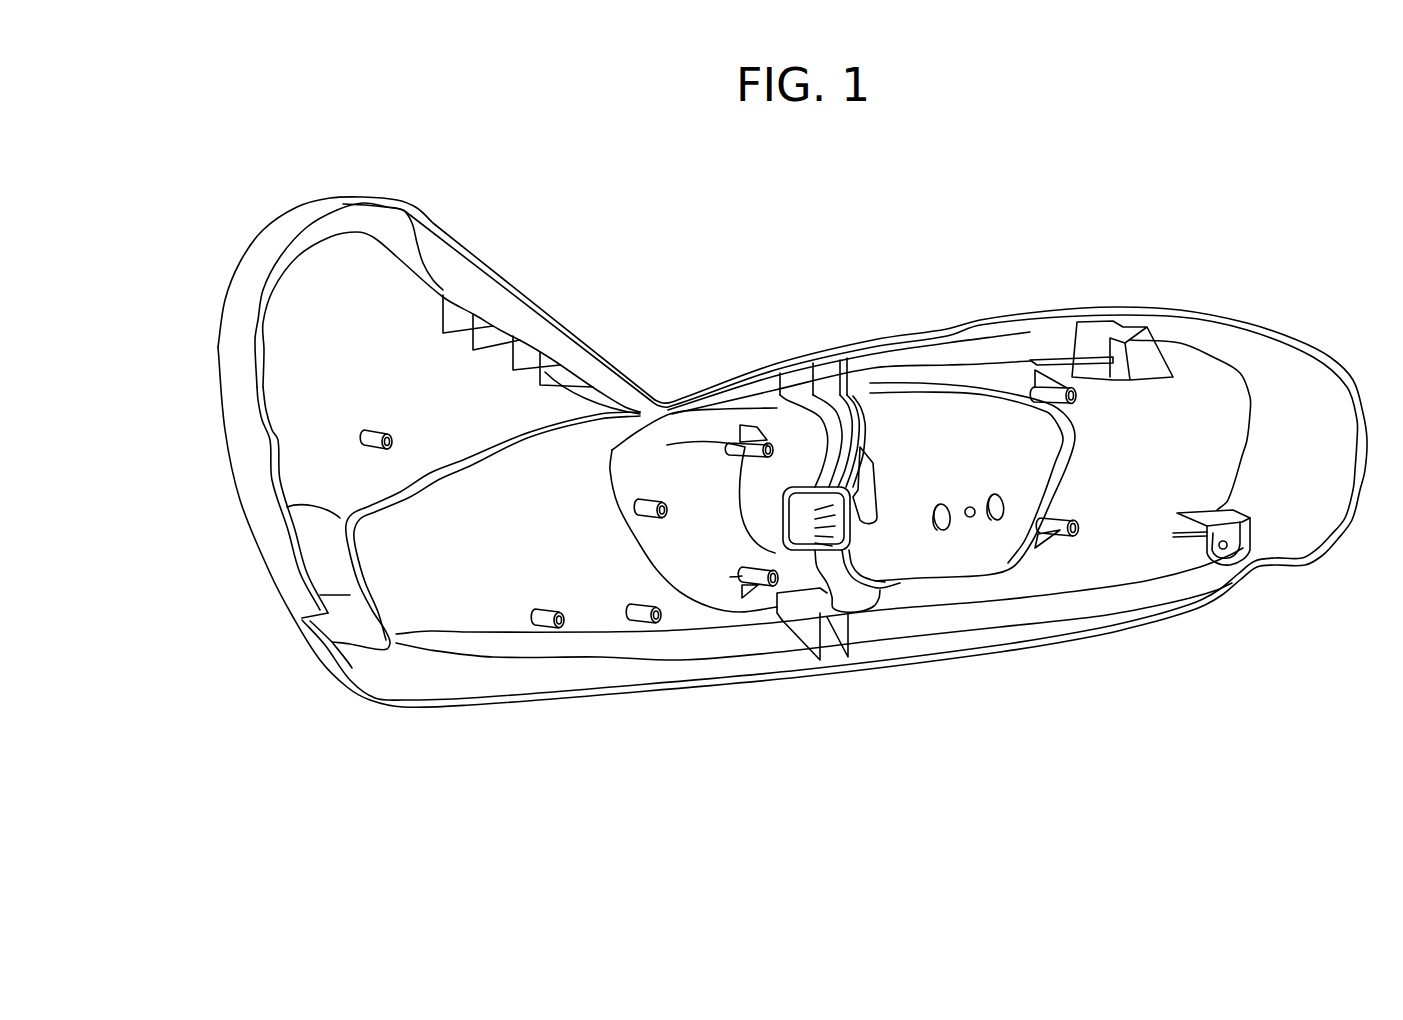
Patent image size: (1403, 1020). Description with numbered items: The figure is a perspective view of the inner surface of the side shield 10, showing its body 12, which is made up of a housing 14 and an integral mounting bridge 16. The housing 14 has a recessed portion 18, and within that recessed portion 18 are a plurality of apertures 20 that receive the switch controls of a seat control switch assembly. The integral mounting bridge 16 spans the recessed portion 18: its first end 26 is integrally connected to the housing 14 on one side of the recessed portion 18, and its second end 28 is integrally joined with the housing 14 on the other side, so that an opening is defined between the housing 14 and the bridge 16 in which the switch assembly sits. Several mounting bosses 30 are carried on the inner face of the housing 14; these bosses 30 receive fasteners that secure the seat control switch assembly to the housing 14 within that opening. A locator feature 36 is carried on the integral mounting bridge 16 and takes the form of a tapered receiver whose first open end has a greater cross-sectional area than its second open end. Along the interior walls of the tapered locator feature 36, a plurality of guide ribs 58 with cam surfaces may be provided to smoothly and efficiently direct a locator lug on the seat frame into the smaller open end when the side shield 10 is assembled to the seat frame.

The side shield 10 is at (1120, 240).
The body 12 is at (378, 705).
The housing 14 is at (1135, 555).
The integral mounting bridge 16 is at (842, 592).
The recessed portion 18 is at (913, 557).
The apertures 20 is at (708, 462).
The first end 26 is at (774, 475).
The second end 28 is at (787, 603).
The mounting bosses 30 is at (754, 425).
The locator feature 36 is at (768, 508).
The guide ribs 58 is at (783, 526).